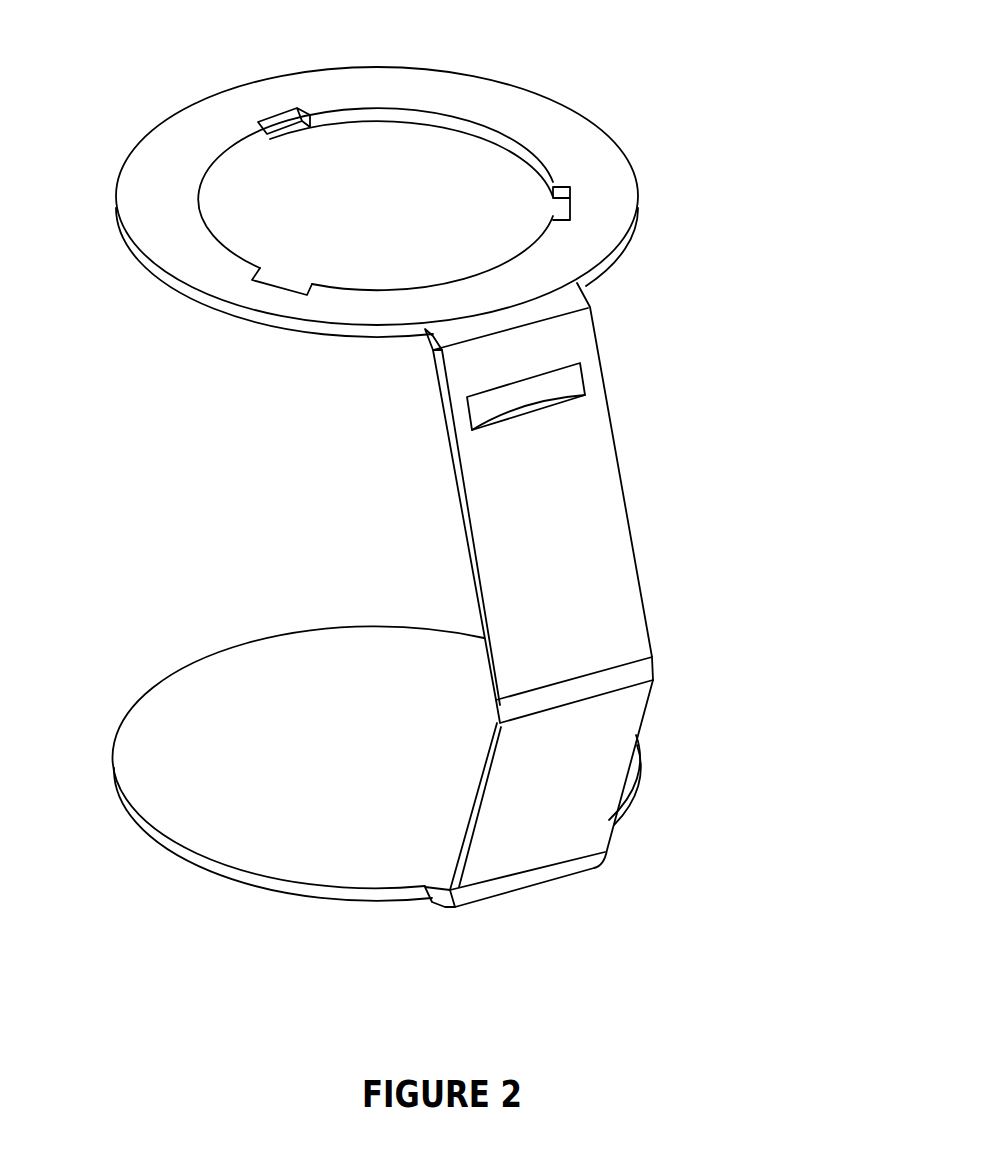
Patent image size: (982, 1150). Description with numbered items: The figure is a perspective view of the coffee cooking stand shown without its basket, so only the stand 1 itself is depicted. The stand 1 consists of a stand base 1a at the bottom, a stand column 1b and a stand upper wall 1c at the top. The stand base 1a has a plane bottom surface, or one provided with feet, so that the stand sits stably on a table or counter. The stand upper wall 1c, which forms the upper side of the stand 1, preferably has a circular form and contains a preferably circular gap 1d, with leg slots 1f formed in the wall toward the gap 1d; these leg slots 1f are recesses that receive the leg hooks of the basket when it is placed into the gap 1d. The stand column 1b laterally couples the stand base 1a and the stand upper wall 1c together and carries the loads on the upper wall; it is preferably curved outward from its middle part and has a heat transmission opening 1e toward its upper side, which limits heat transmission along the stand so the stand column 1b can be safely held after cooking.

The stand 1 is at (464, 468).
The stand base 1a is at (273, 792).
The stand column 1b is at (593, 753).
The stand upper wall 1c is at (490, 97).
The gap 1d is at (338, 223).
The heat transmission opening 1e is at (540, 387).
The leg slot 1f is at (563, 210).